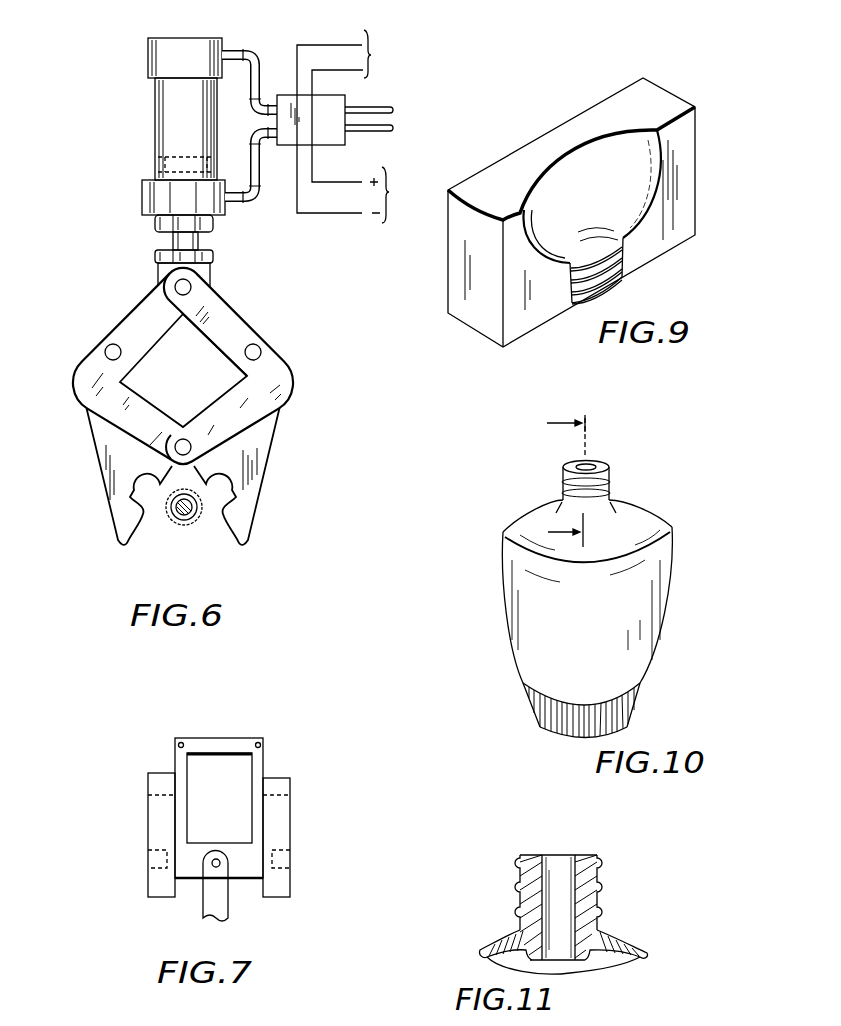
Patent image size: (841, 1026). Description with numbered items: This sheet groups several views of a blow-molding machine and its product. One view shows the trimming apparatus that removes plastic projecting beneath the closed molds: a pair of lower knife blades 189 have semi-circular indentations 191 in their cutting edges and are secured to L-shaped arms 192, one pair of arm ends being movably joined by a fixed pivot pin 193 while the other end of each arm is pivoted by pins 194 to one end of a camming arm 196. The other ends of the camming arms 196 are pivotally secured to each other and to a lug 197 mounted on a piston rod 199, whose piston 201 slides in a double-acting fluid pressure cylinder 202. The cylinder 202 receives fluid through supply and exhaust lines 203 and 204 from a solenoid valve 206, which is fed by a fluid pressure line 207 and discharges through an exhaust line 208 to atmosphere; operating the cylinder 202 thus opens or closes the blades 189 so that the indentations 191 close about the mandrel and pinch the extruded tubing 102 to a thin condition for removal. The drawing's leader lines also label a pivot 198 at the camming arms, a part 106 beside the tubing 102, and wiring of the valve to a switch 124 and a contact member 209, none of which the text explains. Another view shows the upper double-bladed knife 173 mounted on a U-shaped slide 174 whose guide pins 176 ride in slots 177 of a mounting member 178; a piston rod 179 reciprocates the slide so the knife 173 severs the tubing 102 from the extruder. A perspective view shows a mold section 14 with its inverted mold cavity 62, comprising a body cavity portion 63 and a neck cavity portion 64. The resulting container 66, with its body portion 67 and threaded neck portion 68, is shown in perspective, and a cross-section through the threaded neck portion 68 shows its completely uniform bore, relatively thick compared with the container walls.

In FIG. 9, the mold section 14 is at (697, 193).
In FIG. 9, the mold cavity 62 is at (630, 158).
In FIG. 9, the body cavity portion 63 is at (533, 227).
In FIG. 9, the neck cavity portion 64 is at (607, 275).
In FIG. 10, the container 66 is at (678, 573).
In FIG. 10, the body portion 67 is at (628, 678).
In FIG. 10, the threaded neck portion 68 is at (610, 488).
In FIG. 11, the threaded neck portion 68 is at (588, 890).
In FIG. 6, the extruded tubing 102 is at (176, 527).
In FIG. 6, the neck ring 106 is at (190, 520).
In FIG. 6, the switch 124 is at (396, 121).
In FIG. 7, the upper double-bladed knife 173 is at (217, 747).
In FIG. 7, the U-shaped slide 174 is at (262, 757).
In FIG. 7, the guide pins 176 is at (163, 858).
In FIG. 7, the slots 177 is at (170, 790).
In FIG. 7, the mounting member 178 is at (153, 882).
In FIG. 7, the piston rod 179 is at (207, 907).
In FIG. 6, the lower knife blades 189 is at (100, 447).
In FIG. 6, the semi-circular indentations 191 is at (142, 515).
In FIG. 6, the L-shaped arms 192 is at (92, 405).
In FIG. 6, the fixed pivot pin 193 is at (185, 440).
In FIG. 6, the pins 194 is at (107, 351).
In FIG. 6, the camming arms 196 is at (143, 312).
In FIG. 6, the lug 197 is at (210, 272).
In FIG. 6, the upper pivot pin 198 is at (175, 286).
In FIG. 6, the piston rod 199 is at (173, 240).
In FIG. 6, the piston 201 is at (160, 163).
In FIG. 6, the double-acting fluid pressure cylinder 202 is at (155, 96).
In FIG. 6, the fluid pressure supply and exhaust line 203 is at (235, 55).
In FIG. 6, the fluid pressure supply and exhaust line 204 is at (255, 202).
In FIG. 6, the solenoid valve 206 is at (330, 104).
In FIG. 6, the fluid pressure line 207 is at (385, 115).
In FIG. 6, the exhaust line 208 is at (378, 140).
In FIG. 6, the contact member 209 is at (418, 199).